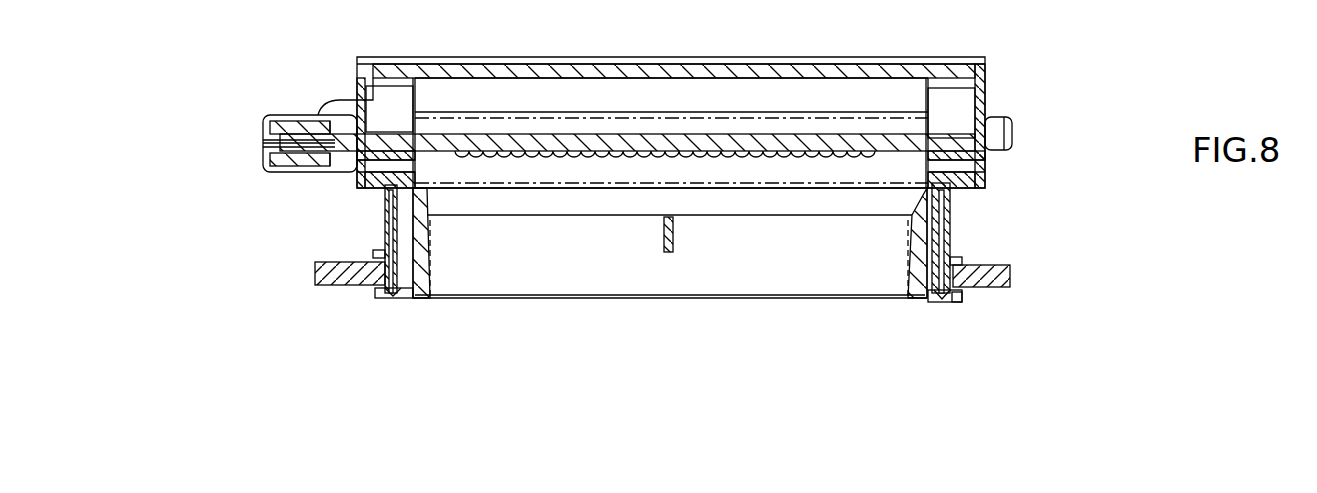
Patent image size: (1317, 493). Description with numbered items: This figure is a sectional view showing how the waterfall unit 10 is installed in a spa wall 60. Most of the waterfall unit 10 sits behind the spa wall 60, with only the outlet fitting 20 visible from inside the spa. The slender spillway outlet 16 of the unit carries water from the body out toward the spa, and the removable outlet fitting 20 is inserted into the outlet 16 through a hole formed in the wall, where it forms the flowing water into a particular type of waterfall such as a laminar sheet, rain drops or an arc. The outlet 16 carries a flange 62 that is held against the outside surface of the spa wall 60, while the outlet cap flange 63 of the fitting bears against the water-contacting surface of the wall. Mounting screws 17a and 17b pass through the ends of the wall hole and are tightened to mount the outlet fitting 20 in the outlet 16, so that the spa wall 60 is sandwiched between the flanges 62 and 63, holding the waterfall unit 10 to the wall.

The waterfall unit 10 is at (208, 16).
The spillway outlet 16 is at (765, 263).
The outlet fitting 20 is at (547, 300).
The outlet flange 62 is at (384, 256).
The spa wall 60 is at (354, 285).
The mounting screw 17a is at (393, 299).
The mounting screw 17b is at (942, 291).
The outlet cap flange 63 is at (957, 302).